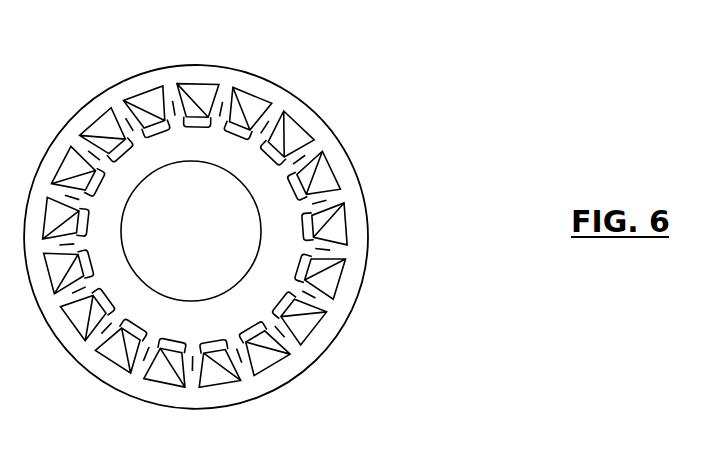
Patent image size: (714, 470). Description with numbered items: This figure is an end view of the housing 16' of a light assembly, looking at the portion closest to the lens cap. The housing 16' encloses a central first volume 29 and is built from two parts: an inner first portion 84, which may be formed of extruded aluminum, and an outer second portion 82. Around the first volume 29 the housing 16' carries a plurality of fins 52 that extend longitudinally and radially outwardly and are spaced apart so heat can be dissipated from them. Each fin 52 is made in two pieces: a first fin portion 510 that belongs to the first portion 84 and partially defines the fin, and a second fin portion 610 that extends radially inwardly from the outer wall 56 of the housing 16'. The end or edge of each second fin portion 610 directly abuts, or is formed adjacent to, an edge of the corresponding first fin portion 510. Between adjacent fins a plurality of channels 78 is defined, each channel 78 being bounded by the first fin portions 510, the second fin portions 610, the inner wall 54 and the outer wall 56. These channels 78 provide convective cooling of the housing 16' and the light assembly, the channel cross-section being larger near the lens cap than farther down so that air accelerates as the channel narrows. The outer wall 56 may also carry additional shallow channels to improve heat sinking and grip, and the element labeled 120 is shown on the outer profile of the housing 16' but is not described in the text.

The housing 16' is at (225, 237).
The first volume 29 is at (180, 242).
The fins 52 is at (172, 95).
The inner wall 54 is at (240, 153).
The outer wall 56 is at (362, 272).
The channels 78 is at (158, 128).
The second portion 82 is at (192, 377).
The first portion 84 is at (150, 343).
The lamination outer profile 120 is at (63, 121).
The first fin portions 510 is at (273, 113).
The second fin portions 610 is at (287, 340).